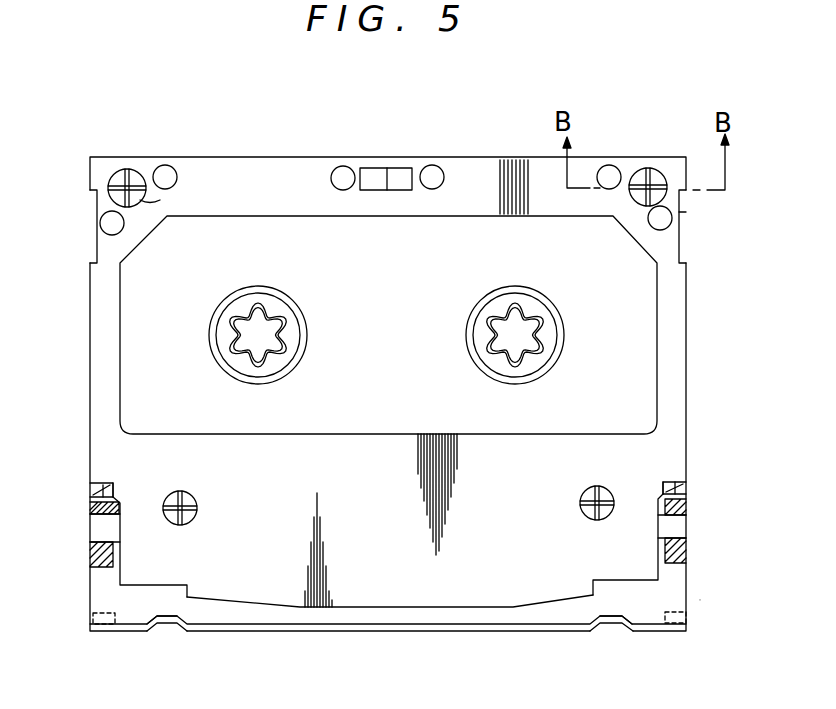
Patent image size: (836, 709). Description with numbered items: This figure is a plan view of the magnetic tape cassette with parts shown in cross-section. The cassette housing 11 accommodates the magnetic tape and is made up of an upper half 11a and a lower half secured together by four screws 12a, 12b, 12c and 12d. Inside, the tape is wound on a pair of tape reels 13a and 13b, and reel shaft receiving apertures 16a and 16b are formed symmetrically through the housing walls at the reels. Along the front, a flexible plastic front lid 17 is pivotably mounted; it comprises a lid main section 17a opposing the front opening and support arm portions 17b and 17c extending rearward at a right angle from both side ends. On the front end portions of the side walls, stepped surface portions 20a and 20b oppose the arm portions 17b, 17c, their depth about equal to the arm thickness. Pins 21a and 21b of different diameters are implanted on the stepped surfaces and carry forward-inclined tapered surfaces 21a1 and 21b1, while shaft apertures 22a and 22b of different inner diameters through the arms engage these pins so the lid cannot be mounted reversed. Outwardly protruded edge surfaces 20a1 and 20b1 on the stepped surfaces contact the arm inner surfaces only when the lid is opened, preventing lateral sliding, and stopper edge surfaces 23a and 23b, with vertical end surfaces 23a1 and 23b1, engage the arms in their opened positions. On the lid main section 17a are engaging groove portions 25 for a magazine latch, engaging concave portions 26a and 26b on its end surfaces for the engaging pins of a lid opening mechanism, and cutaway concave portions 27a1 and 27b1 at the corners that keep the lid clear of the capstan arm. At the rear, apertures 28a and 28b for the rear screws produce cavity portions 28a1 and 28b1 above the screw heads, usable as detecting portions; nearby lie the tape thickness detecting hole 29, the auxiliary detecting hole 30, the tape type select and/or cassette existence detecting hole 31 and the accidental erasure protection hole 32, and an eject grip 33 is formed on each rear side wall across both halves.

The cassette housing 11 is at (303, 157).
The upper half 11a is at (465, 168).
The screw 12a is at (115, 160).
The screw 12b is at (639, 168).
The screw 12c is at (580, 501).
The screw 12d is at (197, 506).
The tape reel 13a is at (247, 313).
The tape reel 13b is at (503, 313).
The reel shaft receiving aperture 16a is at (278, 296).
The reel shaft receiving aperture 16b is at (535, 296).
The front lid 17 is at (432, 622).
The lid main section 17a is at (340, 630).
The support arm portion 17b is at (102, 585).
The support arm portion 17c is at (677, 567).
The stepped surface portion 20a is at (113, 573).
The protruded edge surface 20a1 is at (117, 487).
The stepped surface portion 20b is at (660, 553).
The protruded edge surface 20b1 is at (663, 484).
The pin 21a is at (102, 528).
The tapered surface 21a1 is at (100, 553).
The pin 21b is at (680, 527).
The tapered surface 21b1 is at (680, 550).
The shaft aperture 22a is at (100, 508).
The shaft aperture 22b is at (680, 508).
The stopper edge surface 23a is at (92, 488).
The vertical surface 23a1 is at (103, 485).
The stopper edge surface 23b is at (676, 488).
The vertical surface 23b1 is at (680, 485).
The engaging groove portion 25 is at (160, 632).
The engaging concave portion 26a is at (95, 626).
The engaging concave portion 26b is at (690, 620).
The cutaway concave portion 27a1 is at (175, 617).
The cutaway concave portion 27b1 is at (612, 619).
The aperture 28a is at (142, 166).
The cavity portion 28a1 is at (140, 200).
The aperture 28b is at (660, 168).
The cavity portion 28b1 is at (678, 212).
The tape thickness detecting hole 29 is at (168, 176).
The auxiliary detecting hole 30 is at (112, 223).
The tape type select and/or cassette existence detecting hole 31 is at (432, 177).
The accidental erasure protection hole 32 is at (402, 180).
The eject grip 33 is at (90, 196).